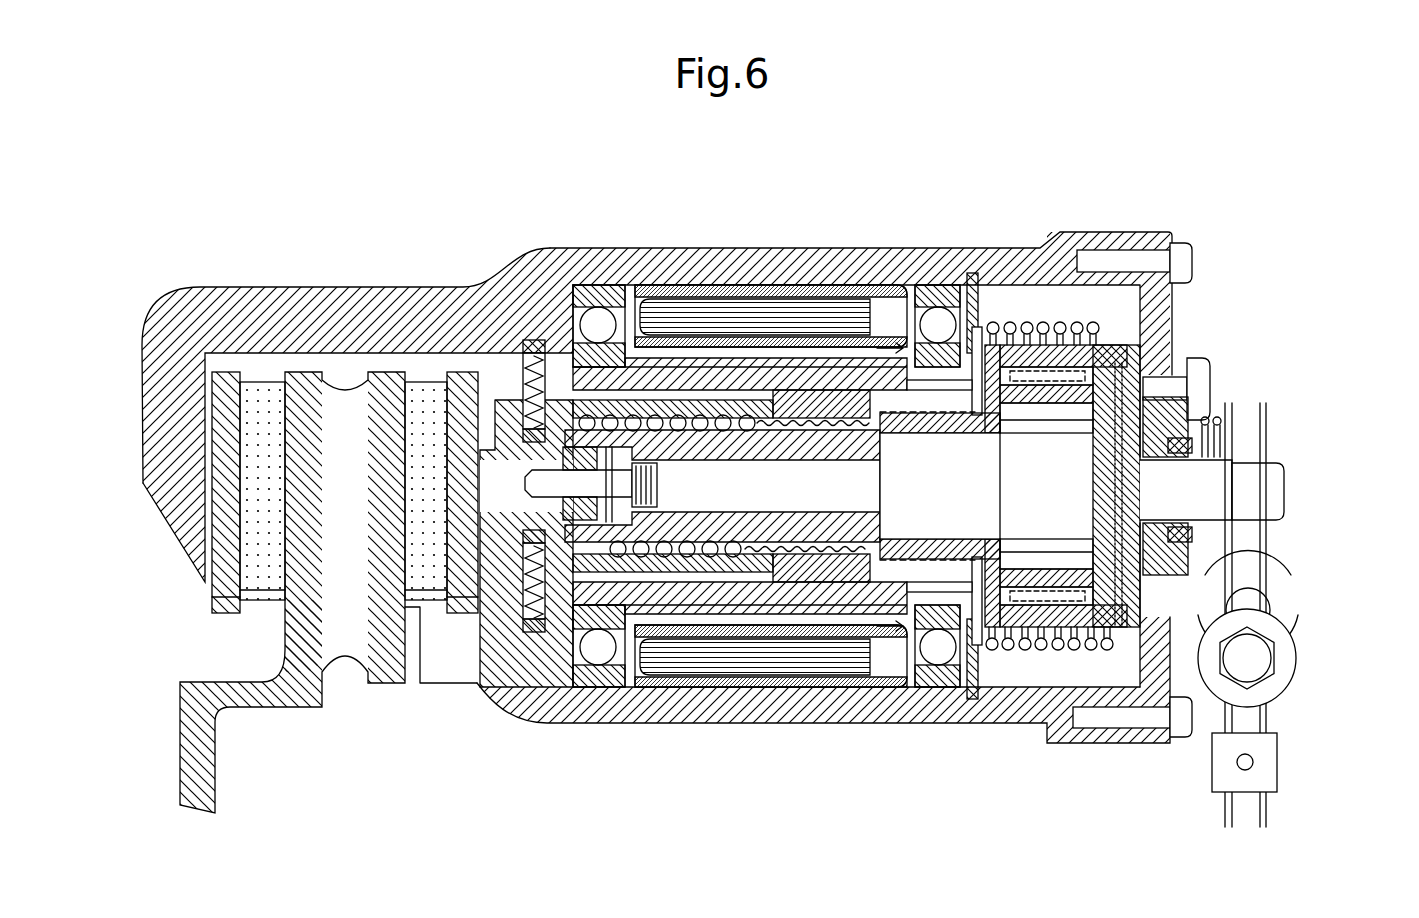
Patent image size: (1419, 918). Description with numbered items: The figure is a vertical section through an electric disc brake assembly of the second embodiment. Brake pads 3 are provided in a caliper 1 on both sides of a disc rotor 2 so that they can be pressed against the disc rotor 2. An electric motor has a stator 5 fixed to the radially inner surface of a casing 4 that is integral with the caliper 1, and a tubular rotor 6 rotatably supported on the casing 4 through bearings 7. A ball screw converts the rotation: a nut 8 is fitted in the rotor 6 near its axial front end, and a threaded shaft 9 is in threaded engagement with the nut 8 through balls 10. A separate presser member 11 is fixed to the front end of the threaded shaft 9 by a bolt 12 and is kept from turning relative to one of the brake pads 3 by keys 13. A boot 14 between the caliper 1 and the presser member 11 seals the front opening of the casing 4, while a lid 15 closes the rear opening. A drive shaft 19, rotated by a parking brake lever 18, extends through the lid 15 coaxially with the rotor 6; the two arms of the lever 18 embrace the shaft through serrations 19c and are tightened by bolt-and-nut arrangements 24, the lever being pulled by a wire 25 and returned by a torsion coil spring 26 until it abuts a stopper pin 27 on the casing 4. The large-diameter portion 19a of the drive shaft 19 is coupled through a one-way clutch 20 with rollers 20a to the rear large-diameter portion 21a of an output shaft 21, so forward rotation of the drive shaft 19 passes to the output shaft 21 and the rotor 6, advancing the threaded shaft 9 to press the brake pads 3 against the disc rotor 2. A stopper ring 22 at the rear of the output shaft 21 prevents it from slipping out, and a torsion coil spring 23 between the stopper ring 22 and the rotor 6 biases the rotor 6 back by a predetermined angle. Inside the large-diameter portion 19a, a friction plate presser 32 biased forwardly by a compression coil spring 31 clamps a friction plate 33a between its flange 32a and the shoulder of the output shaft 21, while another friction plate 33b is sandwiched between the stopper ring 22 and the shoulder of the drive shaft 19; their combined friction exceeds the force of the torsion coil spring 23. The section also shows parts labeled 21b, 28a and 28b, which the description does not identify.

The caliper 1 is at (178, 340).
The disc rotor 2 is at (345, 640).
The brake pads 3 is at (428, 400).
The casing 4 is at (858, 275).
The stator 5 is at (835, 320).
The tubular rotor 6 is at (800, 320).
The bearings 7 is at (598, 675).
The nut 8 is at (755, 405).
The threaded shaft 9 is at (700, 420).
The balls 10 is at (688, 405).
The presser member 11 is at (520, 430).
The bolt 12 is at (683, 520).
The keys 13 is at (490, 430).
The boot 14 is at (513, 607).
The lid 15 is at (1160, 290).
The parking brake lever 18 is at (1263, 723).
The drive shaft 19 is at (1304, 497).
The large-diameter portion 19a is at (1090, 330).
The serrations 19c is at (1243, 460).
The one-way clutch 20 is at (1052, 615).
The rollers 20a is at (1008, 652).
The output shaft 21 is at (840, 560).
The large-diameter portion 21a is at (1030, 325).
The plate 21b is at (975, 305).
The stopper ring 22 is at (1150, 355).
The torsion coil spring 23 is at (1000, 322).
The bolt-and-nut arrangements 24 is at (1257, 663).
The wire 25 is at (1250, 766).
The torsion coil spring 26 is at (1232, 455).
The stopper pin 27 is at (1338, 532).
The ring 28a is at (925, 430).
The ring 28b is at (920, 395).
The compression coil spring 31 is at (1075, 425).
The friction plate presser 32 is at (1030, 428).
The flange 32a is at (1085, 650).
The friction plate 33a is at (990, 400).
The friction plate 33b is at (1125, 372).